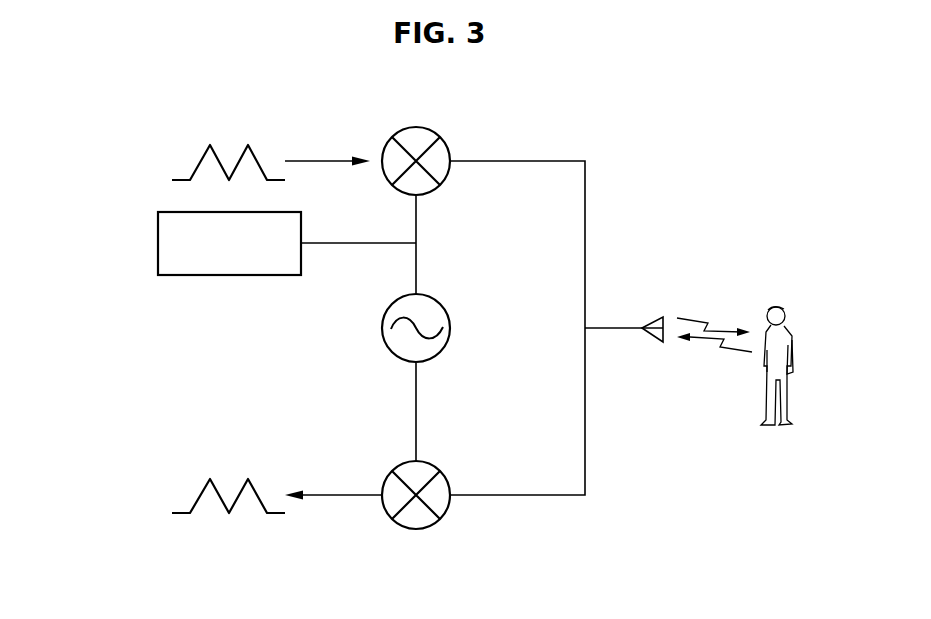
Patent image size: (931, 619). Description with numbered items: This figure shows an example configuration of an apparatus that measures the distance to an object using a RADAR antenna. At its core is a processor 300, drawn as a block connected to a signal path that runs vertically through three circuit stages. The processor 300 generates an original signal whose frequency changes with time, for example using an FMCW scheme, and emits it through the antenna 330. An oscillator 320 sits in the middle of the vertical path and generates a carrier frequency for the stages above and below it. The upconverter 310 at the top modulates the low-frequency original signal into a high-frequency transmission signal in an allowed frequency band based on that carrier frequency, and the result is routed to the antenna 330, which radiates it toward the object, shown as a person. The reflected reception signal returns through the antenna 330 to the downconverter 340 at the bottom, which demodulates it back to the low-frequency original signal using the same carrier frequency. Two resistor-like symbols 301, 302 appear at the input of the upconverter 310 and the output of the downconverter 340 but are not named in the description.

The processor 300 is at (158, 245).
The first resistor 301 is at (200, 162).
The second resistor 302 is at (200, 495).
The upconverter 310 is at (432, 128).
The oscillator 320 is at (437, 294).
The antenna 330 is at (660, 320).
The downconverter 340 is at (435, 464).